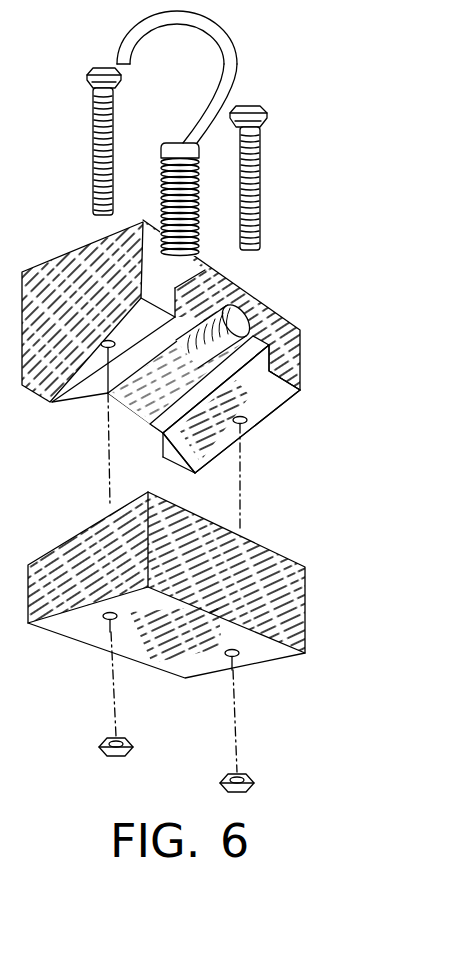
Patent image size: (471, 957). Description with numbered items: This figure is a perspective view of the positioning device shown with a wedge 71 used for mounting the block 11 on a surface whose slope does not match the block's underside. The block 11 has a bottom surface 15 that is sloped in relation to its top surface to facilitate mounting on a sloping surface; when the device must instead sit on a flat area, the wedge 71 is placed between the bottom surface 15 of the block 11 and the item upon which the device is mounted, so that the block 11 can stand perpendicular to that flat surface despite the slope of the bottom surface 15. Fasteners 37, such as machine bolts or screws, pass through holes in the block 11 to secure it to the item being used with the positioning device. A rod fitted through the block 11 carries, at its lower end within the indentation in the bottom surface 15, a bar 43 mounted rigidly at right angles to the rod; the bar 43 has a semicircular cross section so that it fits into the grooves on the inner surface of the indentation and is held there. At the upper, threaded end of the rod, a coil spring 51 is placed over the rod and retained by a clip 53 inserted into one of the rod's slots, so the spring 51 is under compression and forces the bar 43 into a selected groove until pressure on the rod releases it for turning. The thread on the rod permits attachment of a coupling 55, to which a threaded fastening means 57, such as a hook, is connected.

The block 11 is at (300, 355).
The bottom surface 15 is at (268, 403).
The fasteners 37 is at (103, 66).
The bar 43 is at (128, 356).
The spring 51 is at (165, 182).
The clip 53 is at (200, 157).
The coupling 55 is at (205, 138).
The fastening means 57 is at (218, 62).
The wedge 71 is at (311, 572).